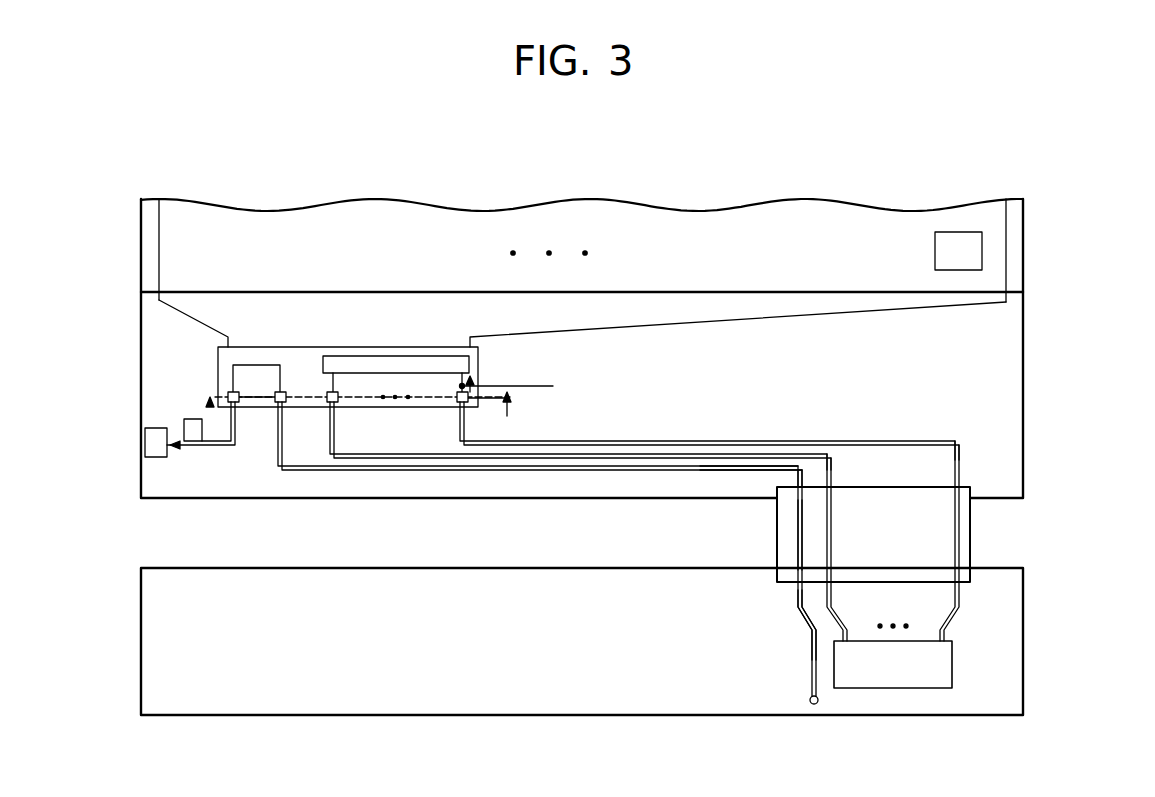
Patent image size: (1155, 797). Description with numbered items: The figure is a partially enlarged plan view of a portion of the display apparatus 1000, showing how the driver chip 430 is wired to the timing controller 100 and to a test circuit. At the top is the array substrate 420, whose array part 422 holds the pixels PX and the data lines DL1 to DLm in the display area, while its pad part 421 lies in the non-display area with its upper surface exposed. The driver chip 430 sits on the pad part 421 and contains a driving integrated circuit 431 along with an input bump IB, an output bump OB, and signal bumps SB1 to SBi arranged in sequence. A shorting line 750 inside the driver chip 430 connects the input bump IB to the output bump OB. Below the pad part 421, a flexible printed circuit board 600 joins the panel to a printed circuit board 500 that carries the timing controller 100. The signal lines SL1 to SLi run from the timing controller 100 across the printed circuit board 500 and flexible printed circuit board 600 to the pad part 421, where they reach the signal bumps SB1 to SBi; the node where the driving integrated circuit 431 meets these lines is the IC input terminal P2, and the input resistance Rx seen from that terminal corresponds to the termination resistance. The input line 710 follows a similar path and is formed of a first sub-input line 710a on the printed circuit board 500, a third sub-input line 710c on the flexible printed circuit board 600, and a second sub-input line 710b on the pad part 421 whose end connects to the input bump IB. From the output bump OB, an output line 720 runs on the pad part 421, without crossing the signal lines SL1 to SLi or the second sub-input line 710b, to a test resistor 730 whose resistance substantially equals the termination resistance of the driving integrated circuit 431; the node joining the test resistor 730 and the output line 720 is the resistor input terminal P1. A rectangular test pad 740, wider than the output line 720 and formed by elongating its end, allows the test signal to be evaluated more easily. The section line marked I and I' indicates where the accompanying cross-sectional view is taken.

The display apparatus 1000 is at (934, 155).
The array substrate 420 is at (1098, 247).
The pad part 421 is at (1015, 338).
The array part 422 is at (1015, 253).
The driver chip 430 is at (258, 347).
The driving integrated circuit 431 is at (405, 356).
The shorting line 750 is at (232, 373).
The test pad 740 is at (192, 418).
The test resistor 730 is at (157, 457).
The output line 720 is at (207, 444).
The input line 710 is at (676, 505).
The first sub-input line 710a is at (796, 620).
The second sub-input line 710b is at (767, 470).
The third sub-input line 710c is at (796, 528).
The flexible printed circuit board 600 is at (971, 528).
The printed circuit board 500 is at (1015, 636).
The timing controller 100 is at (893, 690).
The pixel PX is at (958, 251).
The first data line DL1 is at (1008, 226).
The m-th data line DLm is at (157, 226).
The resistor input terminal P1 is at (172, 442).
The IC input terminal P2 is at (458, 386).
The resistance Rx is at (520, 386).
The section line end I is at (210, 417).
The section line end I' is at (490, 414).
The output bump OB is at (244, 403).
The input bump IB is at (293, 403).
The first signal bump SB1 is at (345, 403).
The i-th signal bump SBi is at (476, 403).
The first signal line SL1 is at (834, 456).
The i-th signal line SLi is at (922, 440).